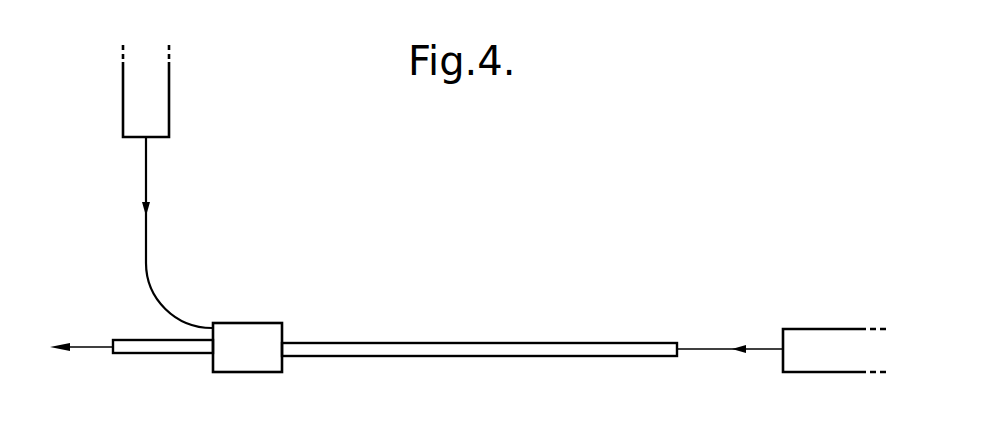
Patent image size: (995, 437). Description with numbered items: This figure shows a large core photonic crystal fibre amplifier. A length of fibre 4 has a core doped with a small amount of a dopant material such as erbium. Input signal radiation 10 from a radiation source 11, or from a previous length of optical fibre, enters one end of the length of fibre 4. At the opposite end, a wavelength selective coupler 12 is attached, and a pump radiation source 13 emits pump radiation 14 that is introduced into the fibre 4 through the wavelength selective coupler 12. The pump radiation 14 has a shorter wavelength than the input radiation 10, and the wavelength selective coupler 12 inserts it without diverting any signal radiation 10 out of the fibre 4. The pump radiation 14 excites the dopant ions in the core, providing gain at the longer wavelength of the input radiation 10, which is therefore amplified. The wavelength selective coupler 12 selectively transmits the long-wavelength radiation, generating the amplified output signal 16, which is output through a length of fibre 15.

The length of fibre 4 is at (480, 356).
The input radiation 10 is at (705, 348).
The radiation source 11 is at (827, 370).
The wavelength selective coupler 12 is at (270, 323).
The pump radiation source 13 is at (160, 101).
The pump radiation 14 is at (150, 276).
The length of fibre 15 is at (163, 357).
The output signal 16 is at (80, 346).